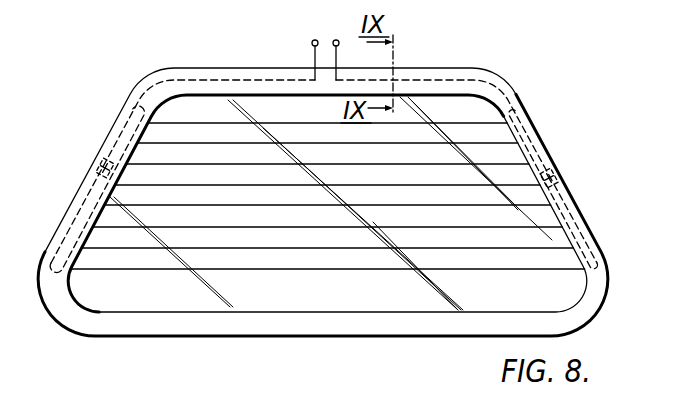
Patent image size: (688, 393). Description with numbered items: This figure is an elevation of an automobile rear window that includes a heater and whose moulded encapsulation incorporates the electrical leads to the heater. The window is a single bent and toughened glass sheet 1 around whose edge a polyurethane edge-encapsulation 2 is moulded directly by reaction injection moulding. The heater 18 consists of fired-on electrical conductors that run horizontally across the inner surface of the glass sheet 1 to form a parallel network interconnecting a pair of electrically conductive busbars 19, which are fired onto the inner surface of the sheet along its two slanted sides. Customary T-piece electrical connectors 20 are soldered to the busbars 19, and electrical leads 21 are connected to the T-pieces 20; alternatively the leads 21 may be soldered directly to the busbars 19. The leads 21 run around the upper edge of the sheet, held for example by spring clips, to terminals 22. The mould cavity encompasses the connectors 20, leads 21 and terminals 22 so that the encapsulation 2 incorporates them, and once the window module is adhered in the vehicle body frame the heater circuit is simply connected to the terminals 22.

The glass sheet 1 is at (453, 288).
The edge-encapsulation 2 is at (270, 327).
The heater 18 is at (340, 186).
The busbars 19 is at (77, 215).
The T-piece electrical connectors 20 is at (100, 170).
The electrical leads 21 is at (212, 80).
The terminals 22 is at (314, 40).